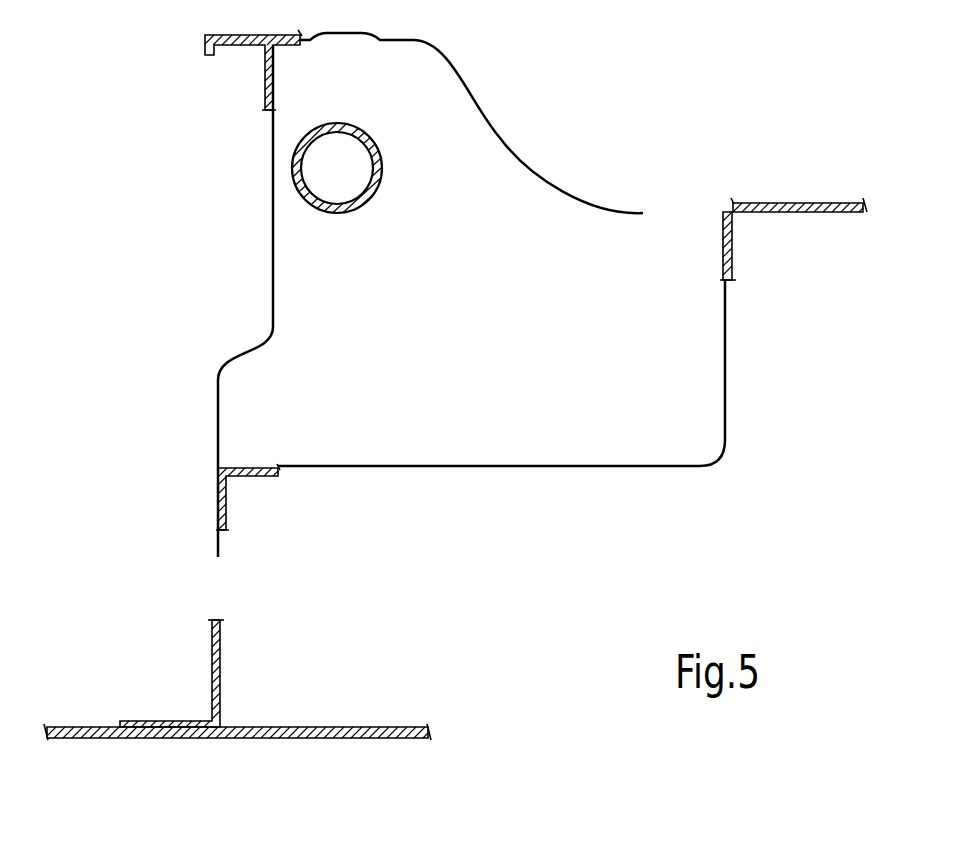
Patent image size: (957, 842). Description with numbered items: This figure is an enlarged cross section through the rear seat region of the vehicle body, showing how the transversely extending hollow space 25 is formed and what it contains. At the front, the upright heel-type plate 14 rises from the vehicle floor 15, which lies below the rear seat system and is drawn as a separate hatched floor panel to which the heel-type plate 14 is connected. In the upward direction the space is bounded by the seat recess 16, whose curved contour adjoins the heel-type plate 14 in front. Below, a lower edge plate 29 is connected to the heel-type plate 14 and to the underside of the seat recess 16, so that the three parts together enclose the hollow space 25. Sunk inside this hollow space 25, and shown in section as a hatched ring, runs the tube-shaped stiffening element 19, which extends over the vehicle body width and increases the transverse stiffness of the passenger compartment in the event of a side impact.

The heel-type plate 14 is at (272, 243).
The vehicle floor 15 is at (80, 738).
The seat recess 16 is at (505, 142).
The tube-shaped stiffening element 19 is at (358, 210).
The hollow space 25 is at (464, 295).
The lower edge plate 29 is at (482, 467).